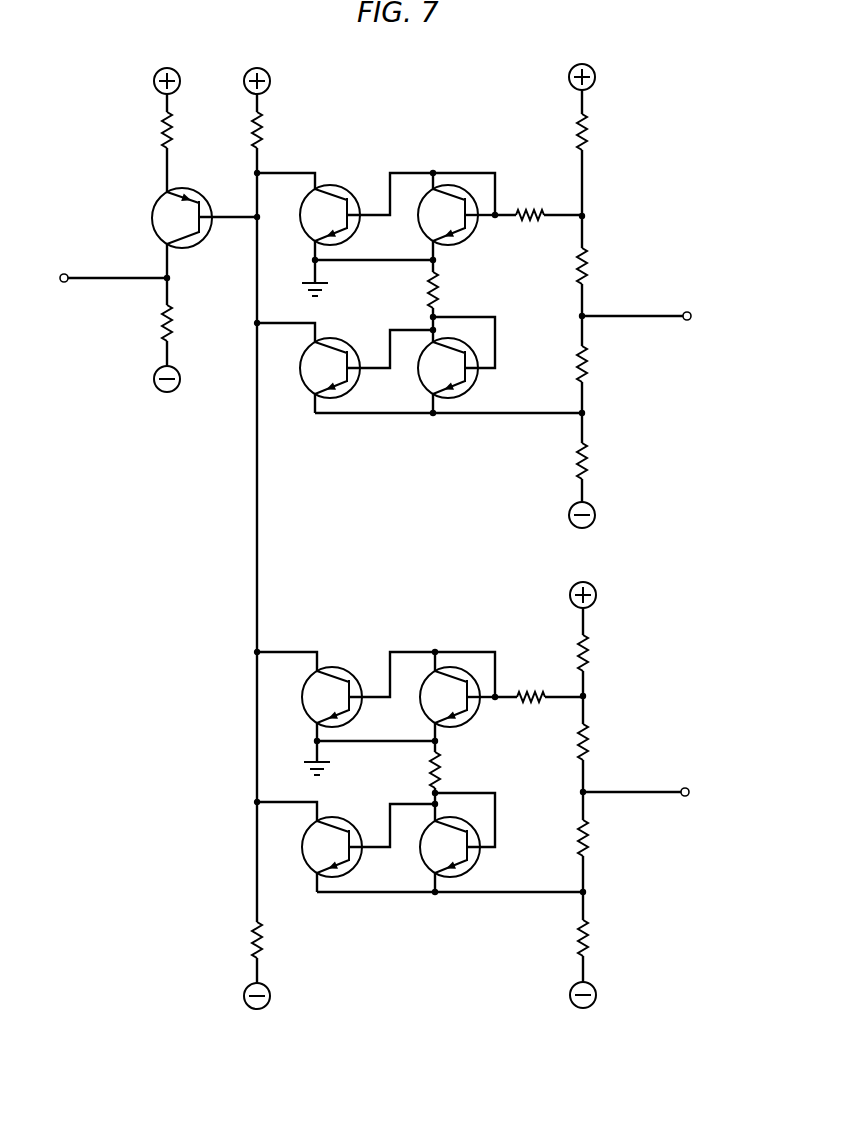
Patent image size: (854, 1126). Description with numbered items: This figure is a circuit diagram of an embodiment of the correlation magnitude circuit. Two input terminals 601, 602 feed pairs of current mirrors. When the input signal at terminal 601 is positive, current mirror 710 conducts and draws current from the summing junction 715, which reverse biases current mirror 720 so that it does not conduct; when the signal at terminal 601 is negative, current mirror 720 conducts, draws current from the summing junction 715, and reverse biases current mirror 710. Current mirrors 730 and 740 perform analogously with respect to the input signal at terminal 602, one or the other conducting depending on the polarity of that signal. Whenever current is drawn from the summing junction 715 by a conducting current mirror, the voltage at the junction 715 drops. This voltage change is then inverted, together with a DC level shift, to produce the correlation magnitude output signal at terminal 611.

The summing junction 715 is at (247, 224).
The current mirror 710 is at (398, 252).
The current mirror 720 is at (398, 405).
The current mirror 730 is at (400, 732).
The current mirror 740 is at (401, 881).
The terminal 601 is at (657, 316).
The terminal 602 is at (653, 792).
The terminal 611 is at (108, 249).